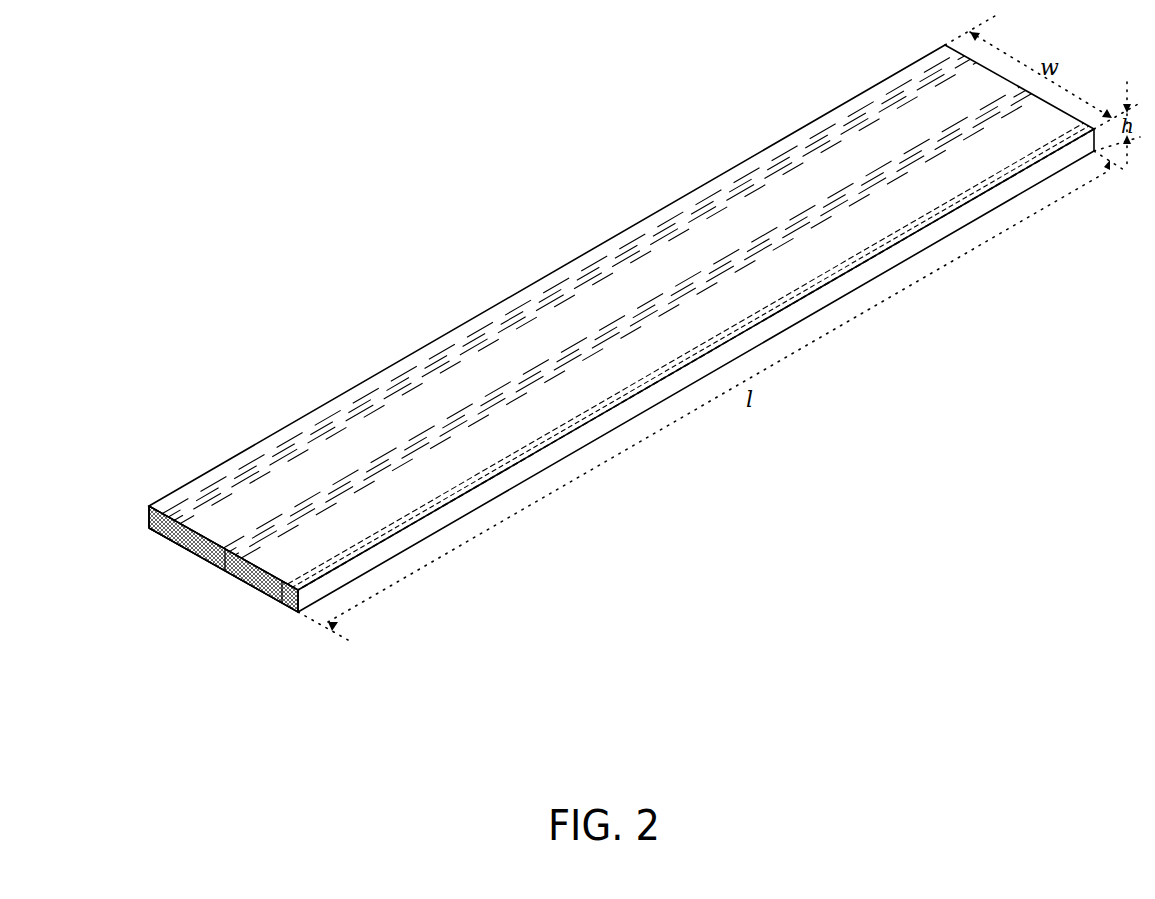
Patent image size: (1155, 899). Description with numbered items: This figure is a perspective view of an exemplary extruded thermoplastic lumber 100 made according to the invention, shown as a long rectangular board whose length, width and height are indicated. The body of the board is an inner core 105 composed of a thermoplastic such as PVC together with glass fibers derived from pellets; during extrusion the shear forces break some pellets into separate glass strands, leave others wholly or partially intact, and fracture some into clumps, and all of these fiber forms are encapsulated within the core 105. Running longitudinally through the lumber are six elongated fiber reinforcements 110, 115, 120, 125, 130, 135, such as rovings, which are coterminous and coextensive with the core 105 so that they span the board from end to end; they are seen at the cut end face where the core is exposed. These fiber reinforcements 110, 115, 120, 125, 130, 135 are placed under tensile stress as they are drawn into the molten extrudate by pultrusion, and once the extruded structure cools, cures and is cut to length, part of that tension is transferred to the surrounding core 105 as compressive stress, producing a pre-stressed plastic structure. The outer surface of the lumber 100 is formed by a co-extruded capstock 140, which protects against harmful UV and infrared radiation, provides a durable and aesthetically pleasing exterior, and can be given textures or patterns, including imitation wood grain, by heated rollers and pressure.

The extruded thermoplastic lumber 100 is at (538, 262).
The inner core 105 is at (188, 542).
The elongated fiber reinforcement 110 is at (148, 521).
The elongated fiber reinforcement 115 is at (216, 565).
The elongated fiber reinforcement 120 is at (277, 600).
The elongated fiber reinforcement 125 is at (283, 598).
The elongated fiber reinforcement 130 is at (223, 562).
The elongated fiber reinforcement 135 is at (153, 533).
The capstock 140 is at (200, 485).